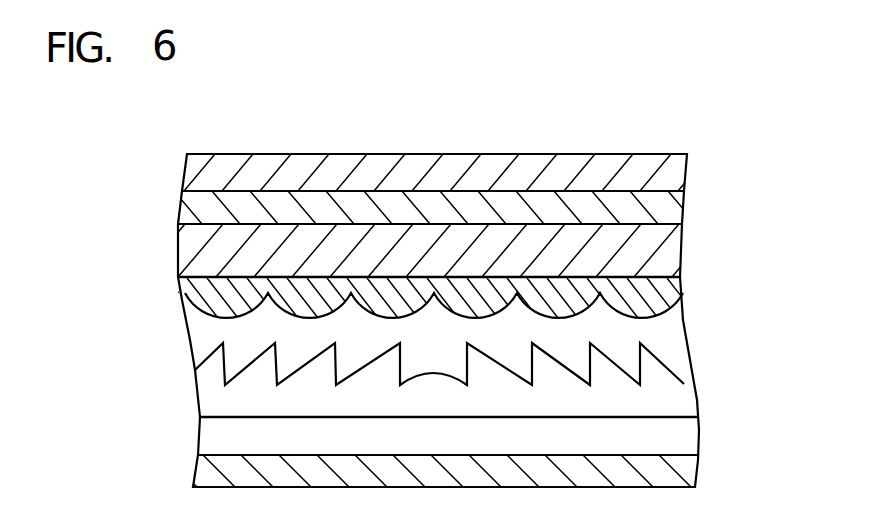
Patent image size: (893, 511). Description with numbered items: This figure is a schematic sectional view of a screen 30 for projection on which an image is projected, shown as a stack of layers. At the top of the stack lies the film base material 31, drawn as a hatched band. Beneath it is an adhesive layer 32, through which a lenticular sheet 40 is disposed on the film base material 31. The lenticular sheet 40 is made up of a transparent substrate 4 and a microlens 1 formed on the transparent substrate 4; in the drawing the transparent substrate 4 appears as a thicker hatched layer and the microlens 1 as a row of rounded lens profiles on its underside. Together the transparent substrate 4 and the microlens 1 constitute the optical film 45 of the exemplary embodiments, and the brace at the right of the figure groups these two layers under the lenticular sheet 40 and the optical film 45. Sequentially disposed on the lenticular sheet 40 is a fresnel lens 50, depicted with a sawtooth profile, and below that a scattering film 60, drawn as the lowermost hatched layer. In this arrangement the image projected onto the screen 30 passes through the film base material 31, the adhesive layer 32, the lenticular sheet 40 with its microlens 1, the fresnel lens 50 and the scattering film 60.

The screen 30 is at (222, 120).
The film base material 31 is at (677, 172).
The adhesive layer 32 is at (680, 203).
The transparent substrate 4 is at (675, 248).
The microlens 1 is at (665, 294).
The lenticular sheet 40 is at (526, 281).
The optical film 45 is at (785, 238).
The fresnel lens 50 is at (692, 400).
The scattering film 60 is at (690, 468).